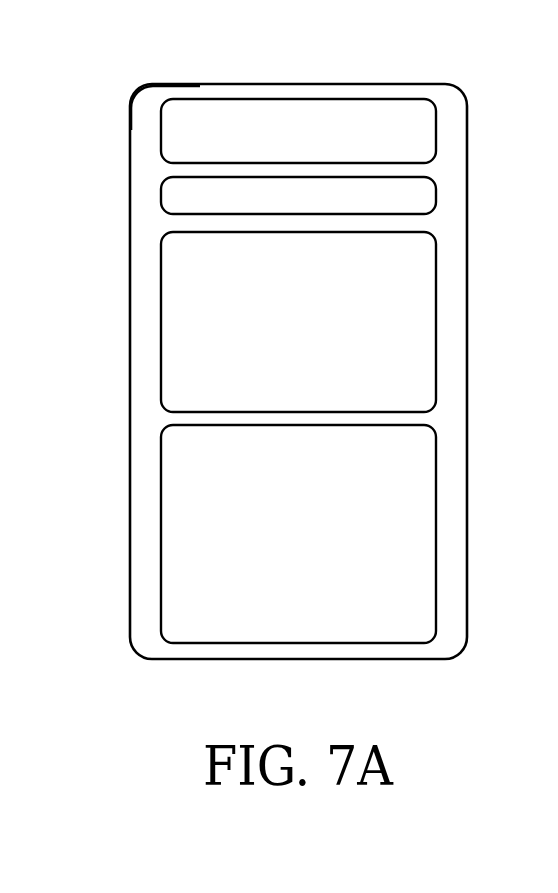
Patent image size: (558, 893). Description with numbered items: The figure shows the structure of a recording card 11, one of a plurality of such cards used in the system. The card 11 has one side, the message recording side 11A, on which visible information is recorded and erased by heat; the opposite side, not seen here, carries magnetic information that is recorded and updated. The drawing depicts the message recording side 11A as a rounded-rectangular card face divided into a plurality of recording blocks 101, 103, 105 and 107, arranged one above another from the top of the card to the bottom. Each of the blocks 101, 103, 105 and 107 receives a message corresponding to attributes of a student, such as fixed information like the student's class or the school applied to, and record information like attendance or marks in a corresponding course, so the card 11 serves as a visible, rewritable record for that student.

The recording card 11 is at (343, 84).
The message recording side 11A is at (152, 114).
The recording block 101 is at (420, 131).
The recording block 103 is at (420, 190).
The recording block 105 is at (420, 285).
The recording block 107 is at (418, 458).